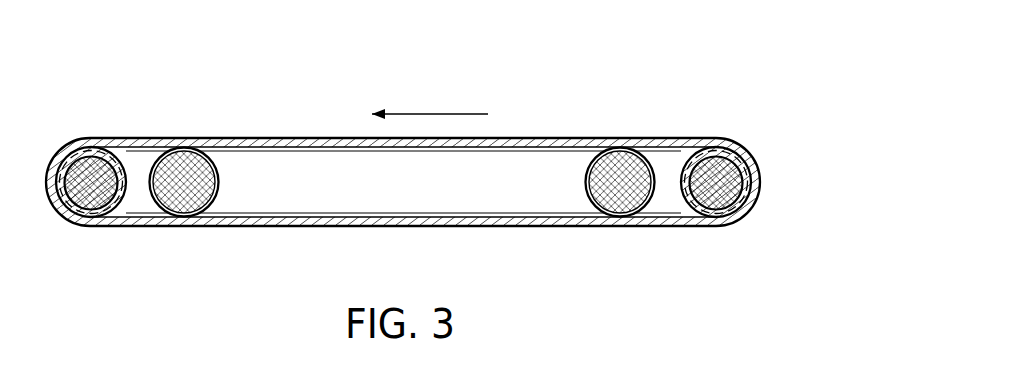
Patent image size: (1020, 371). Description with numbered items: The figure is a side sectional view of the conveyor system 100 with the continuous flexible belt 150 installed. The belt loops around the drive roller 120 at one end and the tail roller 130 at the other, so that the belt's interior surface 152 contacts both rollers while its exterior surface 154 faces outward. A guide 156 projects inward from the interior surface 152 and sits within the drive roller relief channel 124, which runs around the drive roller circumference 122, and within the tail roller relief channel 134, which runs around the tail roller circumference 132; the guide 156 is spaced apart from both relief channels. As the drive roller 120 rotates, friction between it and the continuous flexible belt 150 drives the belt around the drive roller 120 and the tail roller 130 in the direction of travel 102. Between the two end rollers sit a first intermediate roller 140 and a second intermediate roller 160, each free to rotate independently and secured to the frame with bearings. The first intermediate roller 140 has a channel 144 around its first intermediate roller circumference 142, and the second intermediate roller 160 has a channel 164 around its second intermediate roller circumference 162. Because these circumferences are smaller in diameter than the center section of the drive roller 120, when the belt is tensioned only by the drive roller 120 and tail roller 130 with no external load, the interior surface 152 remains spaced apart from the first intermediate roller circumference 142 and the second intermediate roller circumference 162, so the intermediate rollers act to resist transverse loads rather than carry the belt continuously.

The conveyor system 100 is at (786, 86).
The direction of travel 102 is at (432, 112).
The drive roller 120 is at (122, 211).
The drive roller circumference 122 is at (127, 163).
The drive roller relief channel 124 is at (97, 155).
The tail roller 130 is at (745, 172).
The tail roller circumference 132 is at (685, 150).
The tail roller relief channel 134 is at (717, 150).
The first intermediate roller 140 is at (218, 160).
The first intermediate roller circumference 142 is at (218, 192).
The channel 144 is at (218, 178).
The continuous flexible belt 150 is at (599, 236).
The interior surface 152 is at (455, 217).
The exterior surface 154 is at (532, 226).
The guide 156 is at (398, 213).
The second intermediate roller 160 is at (621, 146).
The second intermediate roller circumference 162 is at (587, 193).
The channel 164 is at (588, 177).